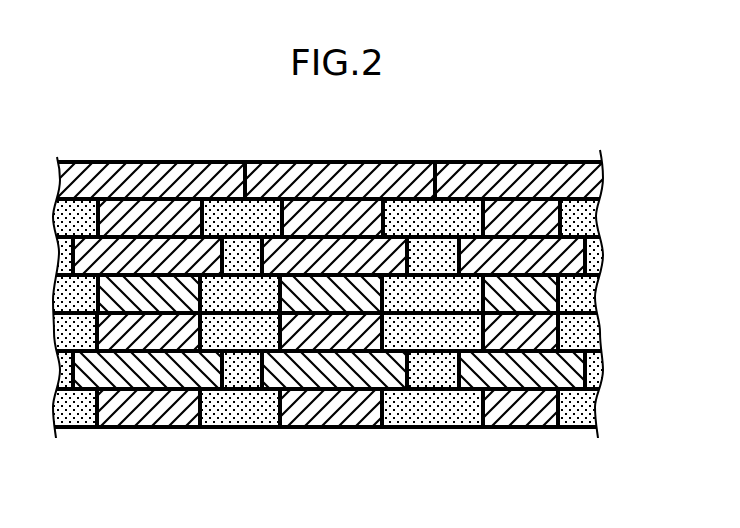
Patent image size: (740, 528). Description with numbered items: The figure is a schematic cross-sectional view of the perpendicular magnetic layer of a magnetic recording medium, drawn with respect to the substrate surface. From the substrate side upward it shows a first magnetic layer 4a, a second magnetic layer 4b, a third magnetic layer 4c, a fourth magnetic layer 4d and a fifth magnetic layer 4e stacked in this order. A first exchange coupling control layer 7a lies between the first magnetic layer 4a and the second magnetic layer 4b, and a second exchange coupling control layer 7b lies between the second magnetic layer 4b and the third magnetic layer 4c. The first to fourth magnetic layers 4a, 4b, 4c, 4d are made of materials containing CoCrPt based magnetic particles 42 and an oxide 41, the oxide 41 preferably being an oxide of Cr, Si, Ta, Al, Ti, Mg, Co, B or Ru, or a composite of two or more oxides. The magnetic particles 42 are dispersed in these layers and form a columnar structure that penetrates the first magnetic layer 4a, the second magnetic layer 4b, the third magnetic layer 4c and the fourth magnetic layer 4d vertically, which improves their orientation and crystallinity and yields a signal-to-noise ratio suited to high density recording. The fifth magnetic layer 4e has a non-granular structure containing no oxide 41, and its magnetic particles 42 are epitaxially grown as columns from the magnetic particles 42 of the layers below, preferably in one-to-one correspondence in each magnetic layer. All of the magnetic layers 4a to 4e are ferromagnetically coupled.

The first magnetic layer 4a is at (595, 407).
The second magnetic layer 4b is at (597, 332).
The third magnetic layer 4c is at (603, 255).
The fourth magnetic layer 4d is at (595, 218).
The fifth magnetic layer 4e is at (605, 180).
The first exchange coupling control layer 7a is at (605, 370).
The second exchange coupling control layer 7b is at (598, 293).
The oxide 41 is at (428, 428).
The magnetic particles 42 is at (333, 428).